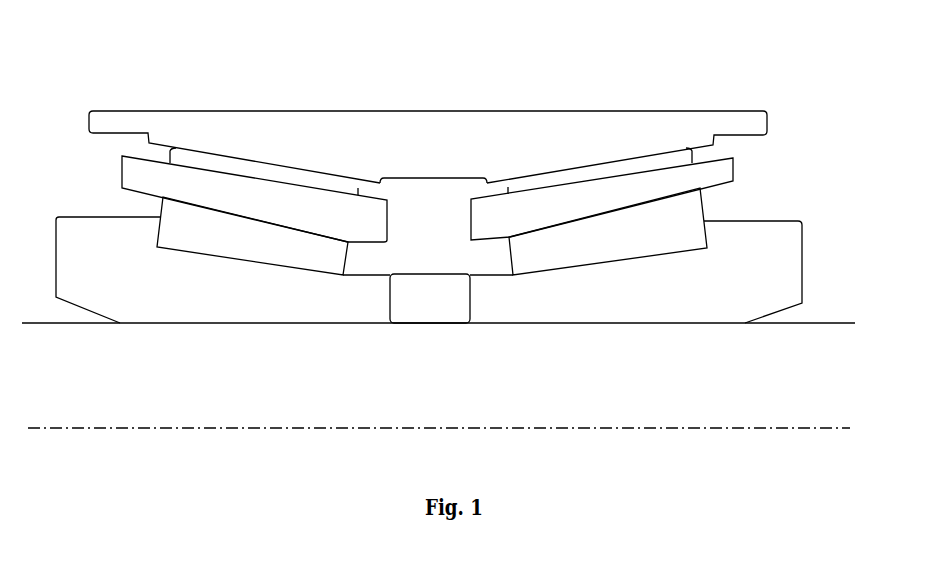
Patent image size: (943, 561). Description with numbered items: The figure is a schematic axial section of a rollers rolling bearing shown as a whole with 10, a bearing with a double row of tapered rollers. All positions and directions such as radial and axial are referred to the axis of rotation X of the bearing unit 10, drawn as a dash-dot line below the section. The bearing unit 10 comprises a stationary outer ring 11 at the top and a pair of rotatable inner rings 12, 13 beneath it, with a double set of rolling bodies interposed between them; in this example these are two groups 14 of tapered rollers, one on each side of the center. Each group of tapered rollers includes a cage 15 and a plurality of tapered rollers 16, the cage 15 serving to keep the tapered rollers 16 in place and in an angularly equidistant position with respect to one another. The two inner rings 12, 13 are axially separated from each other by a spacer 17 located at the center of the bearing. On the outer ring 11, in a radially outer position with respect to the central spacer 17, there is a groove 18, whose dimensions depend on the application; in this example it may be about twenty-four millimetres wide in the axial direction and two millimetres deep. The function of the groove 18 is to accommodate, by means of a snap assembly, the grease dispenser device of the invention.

The rollers rolling bearing 10 is at (556, 91).
The outer ring 11 is at (293, 132).
The inner ring 12 is at (155, 297).
The inner ring 13 is at (655, 300).
The group of tapered rollers 14 is at (102, 175).
The cage 15 is at (205, 182).
The tapered roller 16 is at (292, 240).
The spacer 17 is at (430, 300).
The groove 18 is at (428, 170).
The axis of rotation X is at (112, 430).